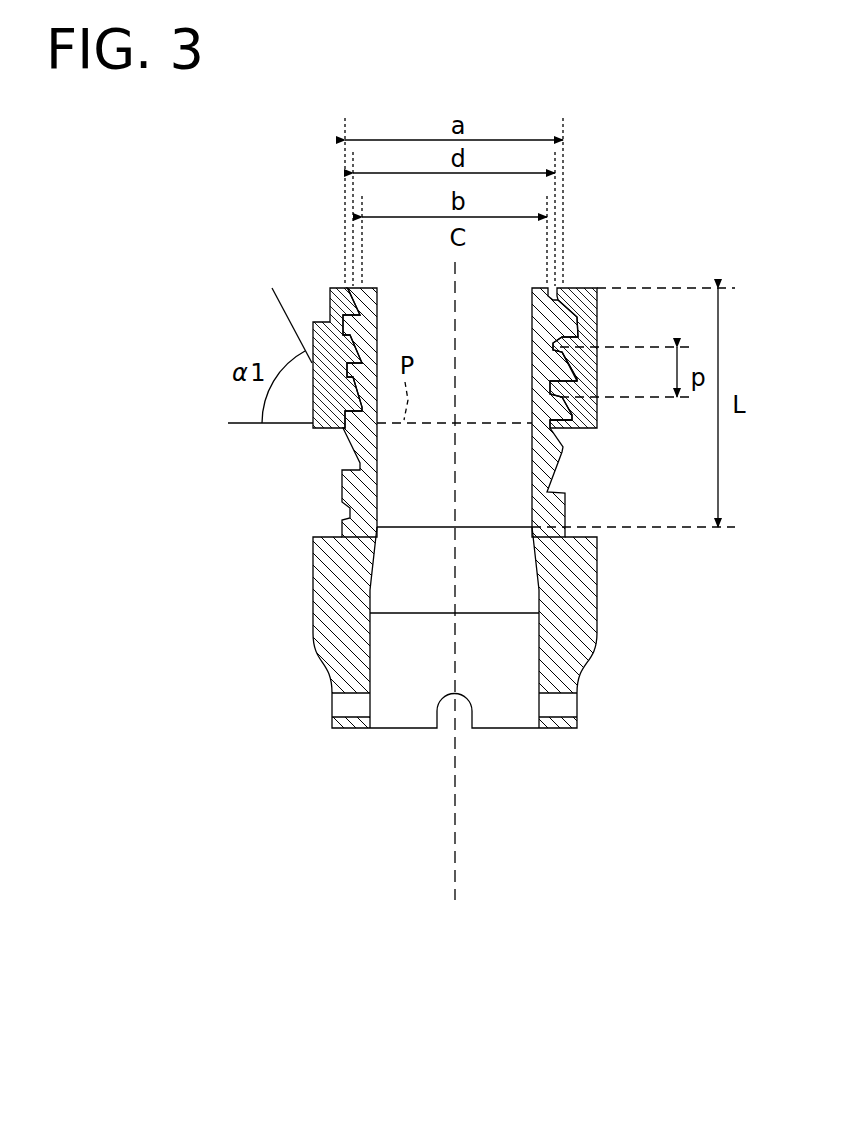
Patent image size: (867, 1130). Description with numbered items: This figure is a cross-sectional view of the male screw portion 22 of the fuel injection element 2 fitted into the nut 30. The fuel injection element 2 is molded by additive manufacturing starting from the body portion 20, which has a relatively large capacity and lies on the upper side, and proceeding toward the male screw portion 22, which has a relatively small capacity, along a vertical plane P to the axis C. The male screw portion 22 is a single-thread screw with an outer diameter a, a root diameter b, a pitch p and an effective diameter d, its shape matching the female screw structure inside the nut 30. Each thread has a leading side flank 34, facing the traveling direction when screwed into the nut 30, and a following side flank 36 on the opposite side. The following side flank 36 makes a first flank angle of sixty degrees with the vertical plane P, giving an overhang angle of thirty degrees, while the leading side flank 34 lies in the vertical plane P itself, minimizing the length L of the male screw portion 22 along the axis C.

The fuel injection element 2 is at (229, 458).
The body portion 20 is at (313, 602).
The male screw portion 22 is at (342, 490).
The nut 30 is at (587, 288).
The leading side flank 34 is at (590, 381).
The following side flank 36 is at (588, 428).